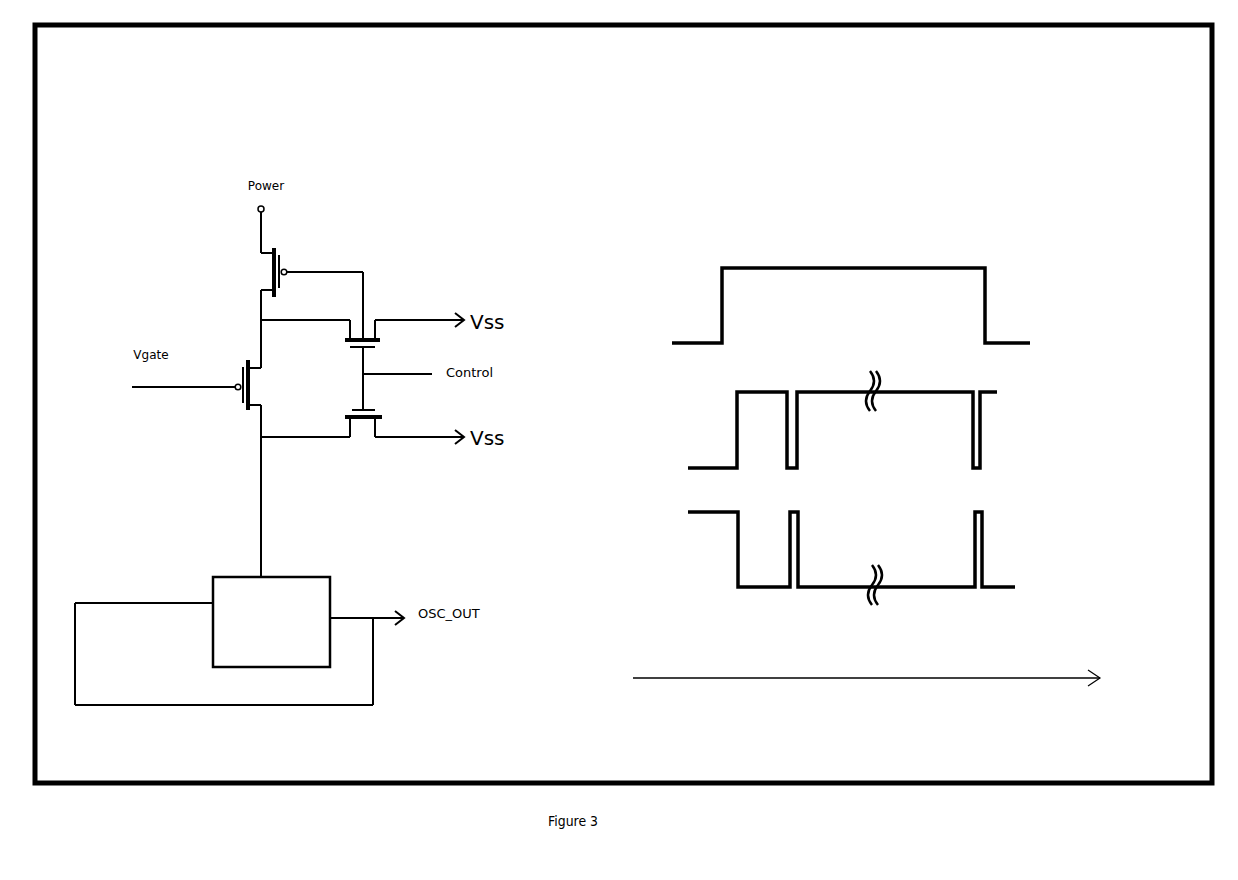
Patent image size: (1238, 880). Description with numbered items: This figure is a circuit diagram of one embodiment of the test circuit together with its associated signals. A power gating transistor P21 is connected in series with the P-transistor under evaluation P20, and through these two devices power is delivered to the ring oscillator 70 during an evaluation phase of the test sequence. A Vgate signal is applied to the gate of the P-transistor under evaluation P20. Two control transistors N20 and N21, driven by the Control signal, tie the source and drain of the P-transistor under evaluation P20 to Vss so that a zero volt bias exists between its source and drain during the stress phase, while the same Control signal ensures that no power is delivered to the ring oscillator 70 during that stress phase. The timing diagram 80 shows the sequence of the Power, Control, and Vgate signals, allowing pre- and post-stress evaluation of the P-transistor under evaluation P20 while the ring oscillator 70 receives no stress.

The ring oscillator 70 is at (239, 641).
The timing diagram 80 is at (909, 484).
The P-transistor under evaluation P20 is at (208, 385).
The power gating transistor P21 is at (301, 272).
The control transistor N20 is at (359, 321).
The control transistor N21 is at (363, 434).